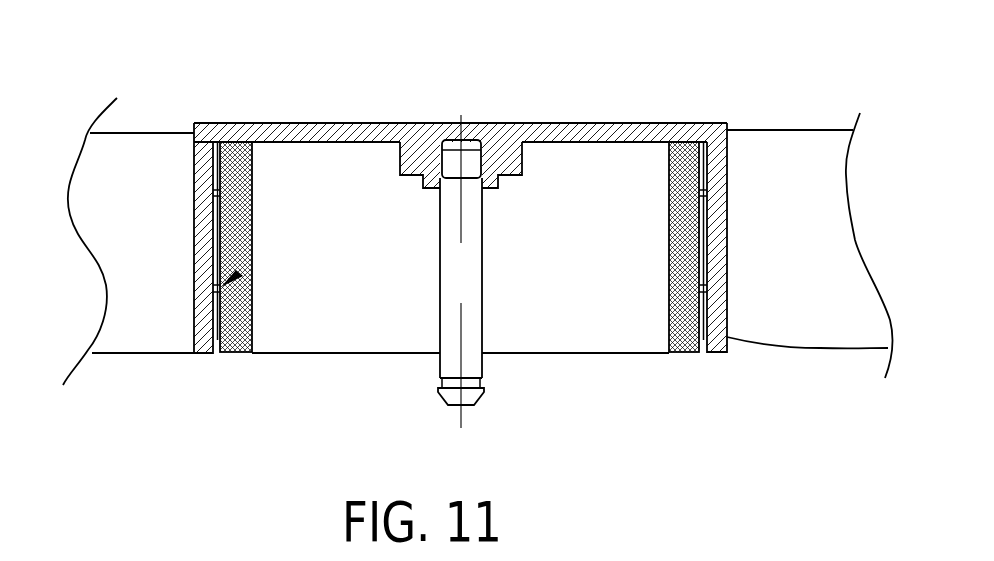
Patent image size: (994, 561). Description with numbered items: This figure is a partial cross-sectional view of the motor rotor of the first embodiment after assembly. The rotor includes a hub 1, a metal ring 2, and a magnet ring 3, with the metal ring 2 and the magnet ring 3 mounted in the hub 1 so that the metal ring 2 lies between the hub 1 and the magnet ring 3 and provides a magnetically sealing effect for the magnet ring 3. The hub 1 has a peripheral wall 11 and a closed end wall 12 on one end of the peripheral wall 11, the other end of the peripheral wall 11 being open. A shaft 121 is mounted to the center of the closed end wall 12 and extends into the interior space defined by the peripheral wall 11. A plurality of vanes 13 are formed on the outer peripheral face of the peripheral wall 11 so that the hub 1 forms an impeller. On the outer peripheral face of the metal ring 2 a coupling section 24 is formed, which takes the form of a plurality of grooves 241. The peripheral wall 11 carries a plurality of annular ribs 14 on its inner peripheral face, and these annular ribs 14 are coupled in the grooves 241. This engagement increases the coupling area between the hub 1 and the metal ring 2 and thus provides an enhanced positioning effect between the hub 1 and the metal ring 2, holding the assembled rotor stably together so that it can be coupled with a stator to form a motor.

The hub 1 is at (610, 104).
The peripheral wall 11 is at (370, 315).
The closed end wall 12 is at (230, 132).
The shaft 121 is at (475, 320).
The vanes 13 is at (98, 143).
The annular ribs 14 is at (213, 193).
The metal ring 2 is at (217, 340).
The coupling section 24 is at (253, 267).
The grooves 241 is at (220, 193).
The magnet ring 3 is at (233, 352).